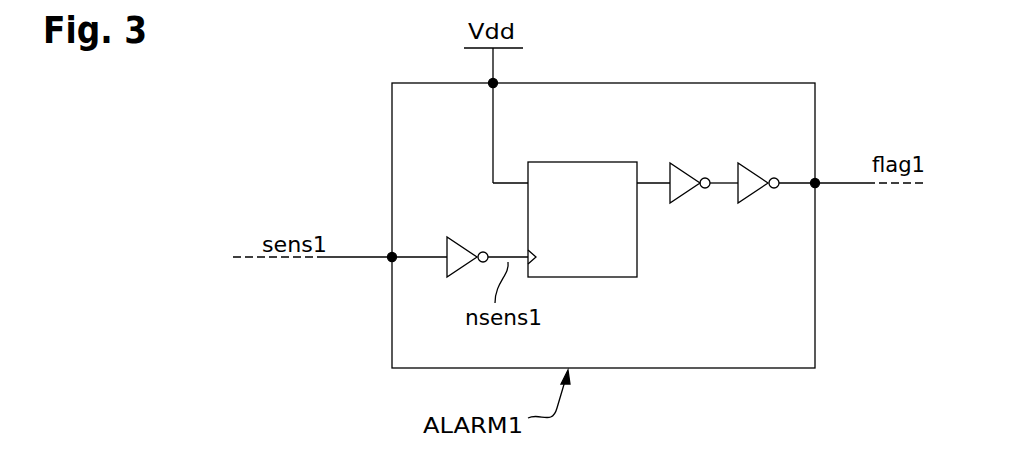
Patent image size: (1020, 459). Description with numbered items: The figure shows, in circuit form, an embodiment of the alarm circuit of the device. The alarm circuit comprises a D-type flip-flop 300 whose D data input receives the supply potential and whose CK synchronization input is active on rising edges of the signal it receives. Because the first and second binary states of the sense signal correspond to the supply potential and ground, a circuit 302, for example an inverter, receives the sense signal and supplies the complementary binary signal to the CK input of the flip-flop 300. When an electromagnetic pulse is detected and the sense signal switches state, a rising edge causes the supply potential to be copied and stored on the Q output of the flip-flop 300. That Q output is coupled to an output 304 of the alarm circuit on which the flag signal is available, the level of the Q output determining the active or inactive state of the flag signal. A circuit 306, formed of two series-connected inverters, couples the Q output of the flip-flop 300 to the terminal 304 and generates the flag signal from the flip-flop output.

The D-type flip-flop 300 is at (585, 177).
The circuit 302 is at (466, 252).
The output 304 is at (817, 186).
The circuit 306 is at (716, 148).